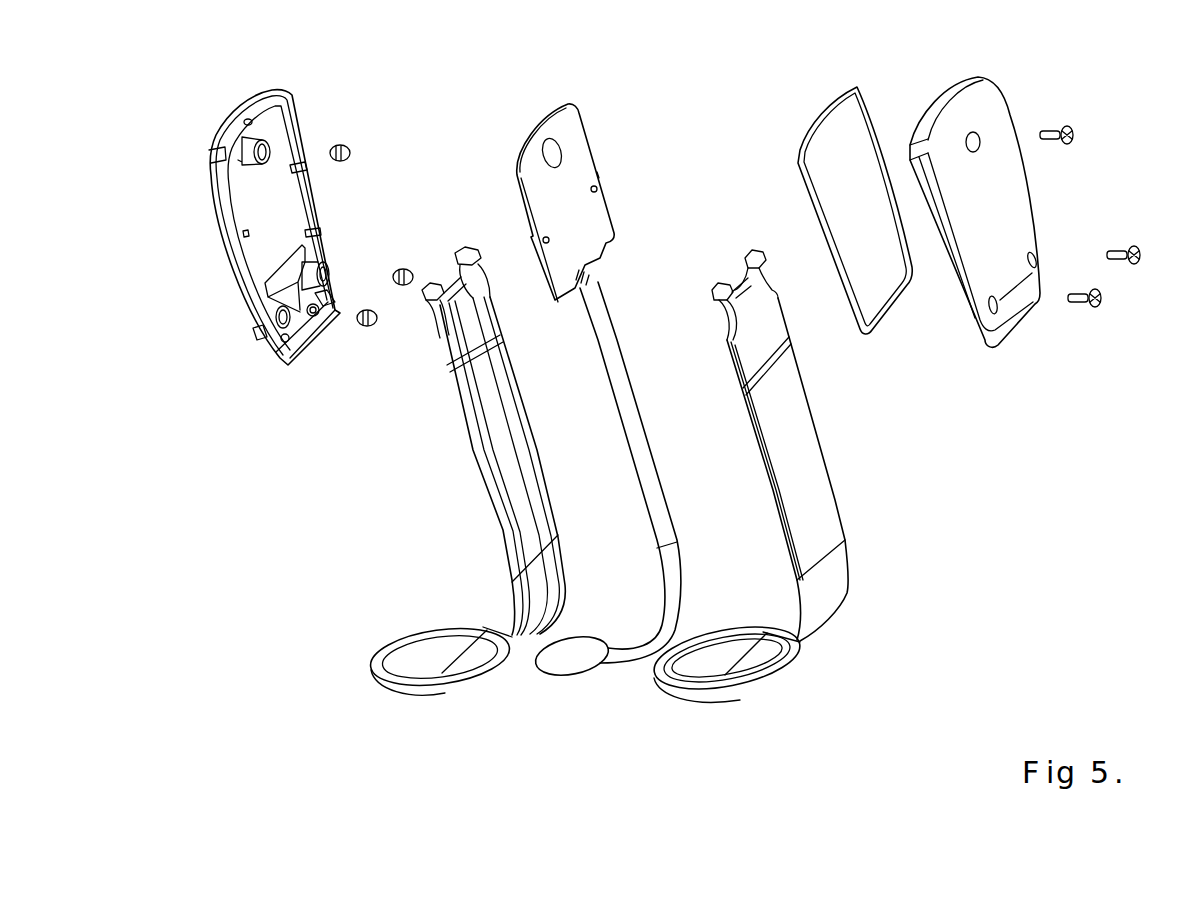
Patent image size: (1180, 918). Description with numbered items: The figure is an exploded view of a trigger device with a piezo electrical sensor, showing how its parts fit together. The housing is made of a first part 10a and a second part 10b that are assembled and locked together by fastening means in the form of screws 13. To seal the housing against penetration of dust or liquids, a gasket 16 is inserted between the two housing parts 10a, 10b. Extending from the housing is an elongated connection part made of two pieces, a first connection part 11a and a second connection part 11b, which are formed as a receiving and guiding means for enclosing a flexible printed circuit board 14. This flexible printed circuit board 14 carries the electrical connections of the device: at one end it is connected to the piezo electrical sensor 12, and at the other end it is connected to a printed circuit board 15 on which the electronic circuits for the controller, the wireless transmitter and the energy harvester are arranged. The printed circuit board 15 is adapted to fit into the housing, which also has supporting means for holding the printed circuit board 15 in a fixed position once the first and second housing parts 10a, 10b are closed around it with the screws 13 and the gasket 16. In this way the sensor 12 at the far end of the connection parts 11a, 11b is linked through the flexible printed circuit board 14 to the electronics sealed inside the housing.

The first part 10a is at (297, 103).
The second part 10b is at (980, 95).
The first connection part 11a is at (478, 478).
The second connection part 11b is at (818, 438).
The piezo electrical sensor 12 is at (570, 660).
The screws 13 is at (1078, 133).
The flexible printed circuit board 14 is at (635, 427).
The printed circuit board 15 is at (600, 217).
The gasket 16 is at (863, 93).